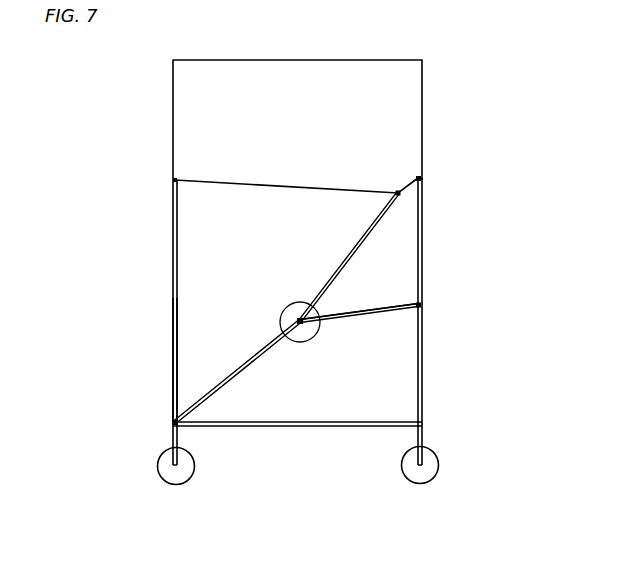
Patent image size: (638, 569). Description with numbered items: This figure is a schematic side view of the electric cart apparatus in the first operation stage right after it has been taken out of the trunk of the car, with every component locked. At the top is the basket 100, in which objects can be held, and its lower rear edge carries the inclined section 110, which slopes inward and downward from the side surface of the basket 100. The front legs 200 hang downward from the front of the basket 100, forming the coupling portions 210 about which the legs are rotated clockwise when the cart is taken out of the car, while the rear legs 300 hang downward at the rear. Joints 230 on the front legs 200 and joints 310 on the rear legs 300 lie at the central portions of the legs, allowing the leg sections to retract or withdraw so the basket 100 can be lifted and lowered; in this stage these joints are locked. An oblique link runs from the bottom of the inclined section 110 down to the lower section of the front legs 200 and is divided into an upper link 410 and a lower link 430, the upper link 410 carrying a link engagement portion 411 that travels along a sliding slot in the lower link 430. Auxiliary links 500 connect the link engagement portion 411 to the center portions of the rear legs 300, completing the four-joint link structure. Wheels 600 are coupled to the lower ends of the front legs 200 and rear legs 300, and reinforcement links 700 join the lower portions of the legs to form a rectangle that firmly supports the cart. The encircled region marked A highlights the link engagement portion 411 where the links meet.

The basket 100 is at (183, 105).
The inclined section 110 is at (418, 178).
The front legs 200 is at (177, 245).
The coupling portions 210 is at (173, 180).
The joints 230 is at (177, 298).
The rear legs 300 is at (423, 248).
The joints 310 is at (420, 303).
The upper link 410 is at (388, 208).
The link engagement portion 411 is at (284, 326).
The lower link 430 is at (243, 371).
The auxiliary links 500 is at (368, 307).
The wheels 600 is at (167, 463).
The reinforcement links 700 is at (303, 427).
The detail region A is at (318, 335).